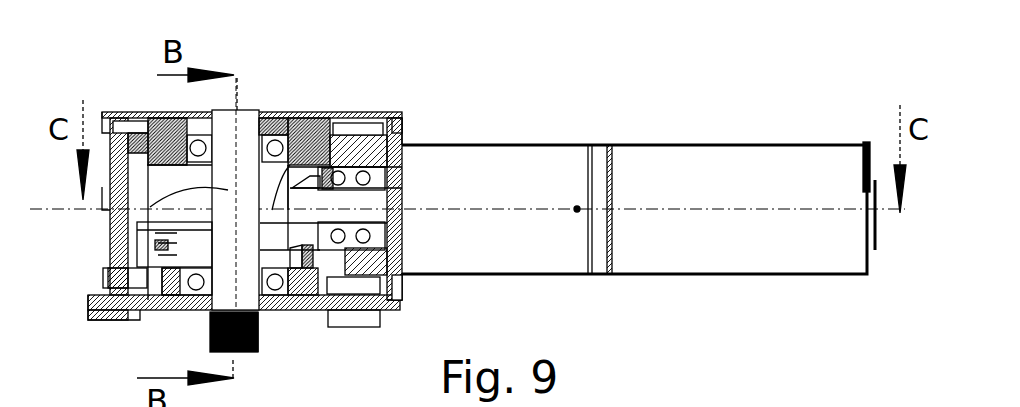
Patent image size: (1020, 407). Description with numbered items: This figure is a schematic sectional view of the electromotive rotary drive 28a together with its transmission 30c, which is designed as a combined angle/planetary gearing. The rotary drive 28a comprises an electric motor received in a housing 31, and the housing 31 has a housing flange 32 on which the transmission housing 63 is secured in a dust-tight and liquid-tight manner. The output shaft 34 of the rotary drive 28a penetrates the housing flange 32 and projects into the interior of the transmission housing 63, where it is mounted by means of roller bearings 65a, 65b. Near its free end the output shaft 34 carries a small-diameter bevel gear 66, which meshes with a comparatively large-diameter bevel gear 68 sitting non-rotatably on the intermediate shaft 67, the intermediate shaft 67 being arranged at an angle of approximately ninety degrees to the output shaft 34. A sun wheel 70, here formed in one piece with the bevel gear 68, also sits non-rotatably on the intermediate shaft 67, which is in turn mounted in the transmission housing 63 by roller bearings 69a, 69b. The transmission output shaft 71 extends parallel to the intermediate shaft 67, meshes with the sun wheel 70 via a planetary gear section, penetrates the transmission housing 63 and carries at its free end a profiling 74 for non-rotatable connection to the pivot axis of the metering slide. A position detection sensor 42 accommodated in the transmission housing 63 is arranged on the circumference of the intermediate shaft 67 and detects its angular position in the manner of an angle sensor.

The electromotive rotary drive 28a is at (638, 122).
The transmission 30c is at (324, 83).
The housing 31 is at (712, 147).
The housing flange 32 is at (392, 125).
The output shaft 34 is at (373, 200).
The position detection sensor 42 is at (199, 112).
The transmission housing 63 is at (197, 190).
The roller bearing 65a is at (346, 140).
The roller bearing 65b is at (392, 125).
The bevel gear 66 is at (293, 195).
The intermediate shaft 67 is at (150, 230).
The bevel gear 68 is at (150, 247).
The roller bearing 69a is at (290, 170).
The roller bearing 69b is at (288, 297).
The sun wheel 70 is at (120, 302).
The transmission output shaft 71 is at (210, 325).
The profiling 74 is at (256, 320).